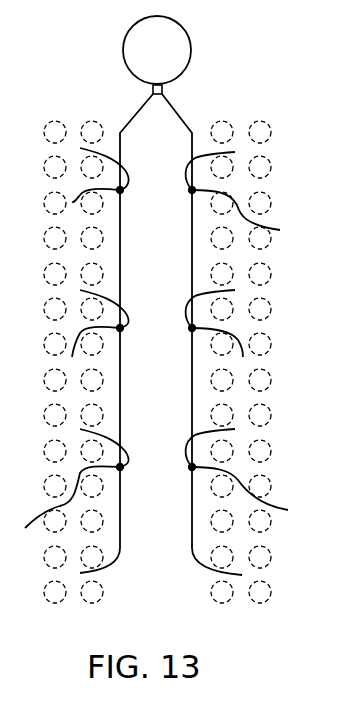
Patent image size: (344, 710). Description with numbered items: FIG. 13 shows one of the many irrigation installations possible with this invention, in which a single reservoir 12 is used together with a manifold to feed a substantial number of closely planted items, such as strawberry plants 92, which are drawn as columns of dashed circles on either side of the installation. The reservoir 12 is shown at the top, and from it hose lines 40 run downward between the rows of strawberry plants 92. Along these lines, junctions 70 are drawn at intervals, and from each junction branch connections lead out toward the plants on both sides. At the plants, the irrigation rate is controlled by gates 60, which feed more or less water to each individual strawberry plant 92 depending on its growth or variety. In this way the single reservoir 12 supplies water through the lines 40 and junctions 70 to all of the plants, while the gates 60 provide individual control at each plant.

The reservoir 12 is at (178, 47).
The lead wire body 40 is at (140, 108).
The gate 60 is at (80, 148).
The junction nodes 70 is at (190, 190).
The strawberry plants 92 is at (55, 273).